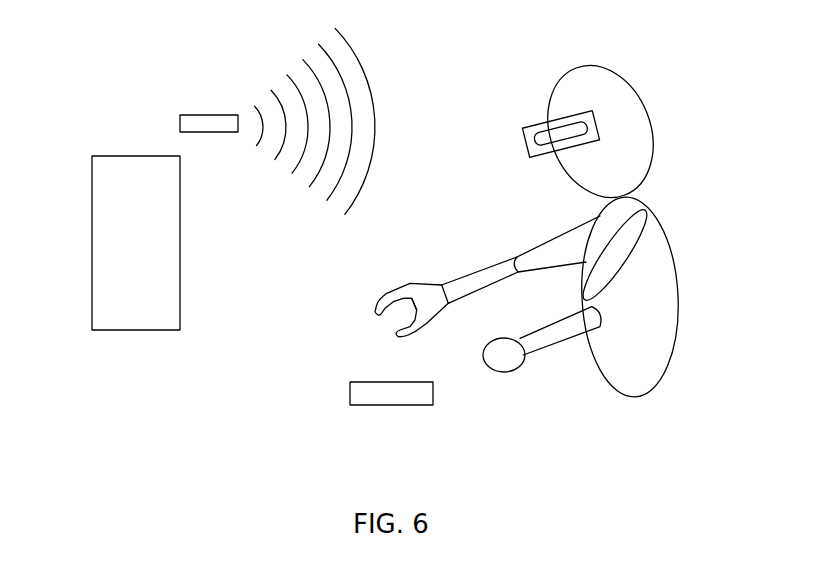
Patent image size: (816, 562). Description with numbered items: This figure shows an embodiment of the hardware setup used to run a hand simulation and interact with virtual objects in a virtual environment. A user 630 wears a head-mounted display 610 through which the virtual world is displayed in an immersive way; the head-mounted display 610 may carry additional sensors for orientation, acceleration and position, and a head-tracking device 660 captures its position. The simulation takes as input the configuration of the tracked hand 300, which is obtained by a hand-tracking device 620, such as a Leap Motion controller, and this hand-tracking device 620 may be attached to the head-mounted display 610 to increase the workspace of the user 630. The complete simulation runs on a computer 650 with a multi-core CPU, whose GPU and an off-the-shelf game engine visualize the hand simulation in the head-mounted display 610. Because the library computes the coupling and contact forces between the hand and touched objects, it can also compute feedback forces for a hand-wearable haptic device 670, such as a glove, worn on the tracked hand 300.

The tracked hand 300 is at (393, 333).
The head-mounted display 610 is at (550, 128).
The hand-tracking device 620 is at (367, 390).
The user 630 is at (667, 285).
The computer 650 is at (108, 241).
The head-tracking device 660 is at (207, 122).
The hand-wearable haptic device 670 is at (413, 285).